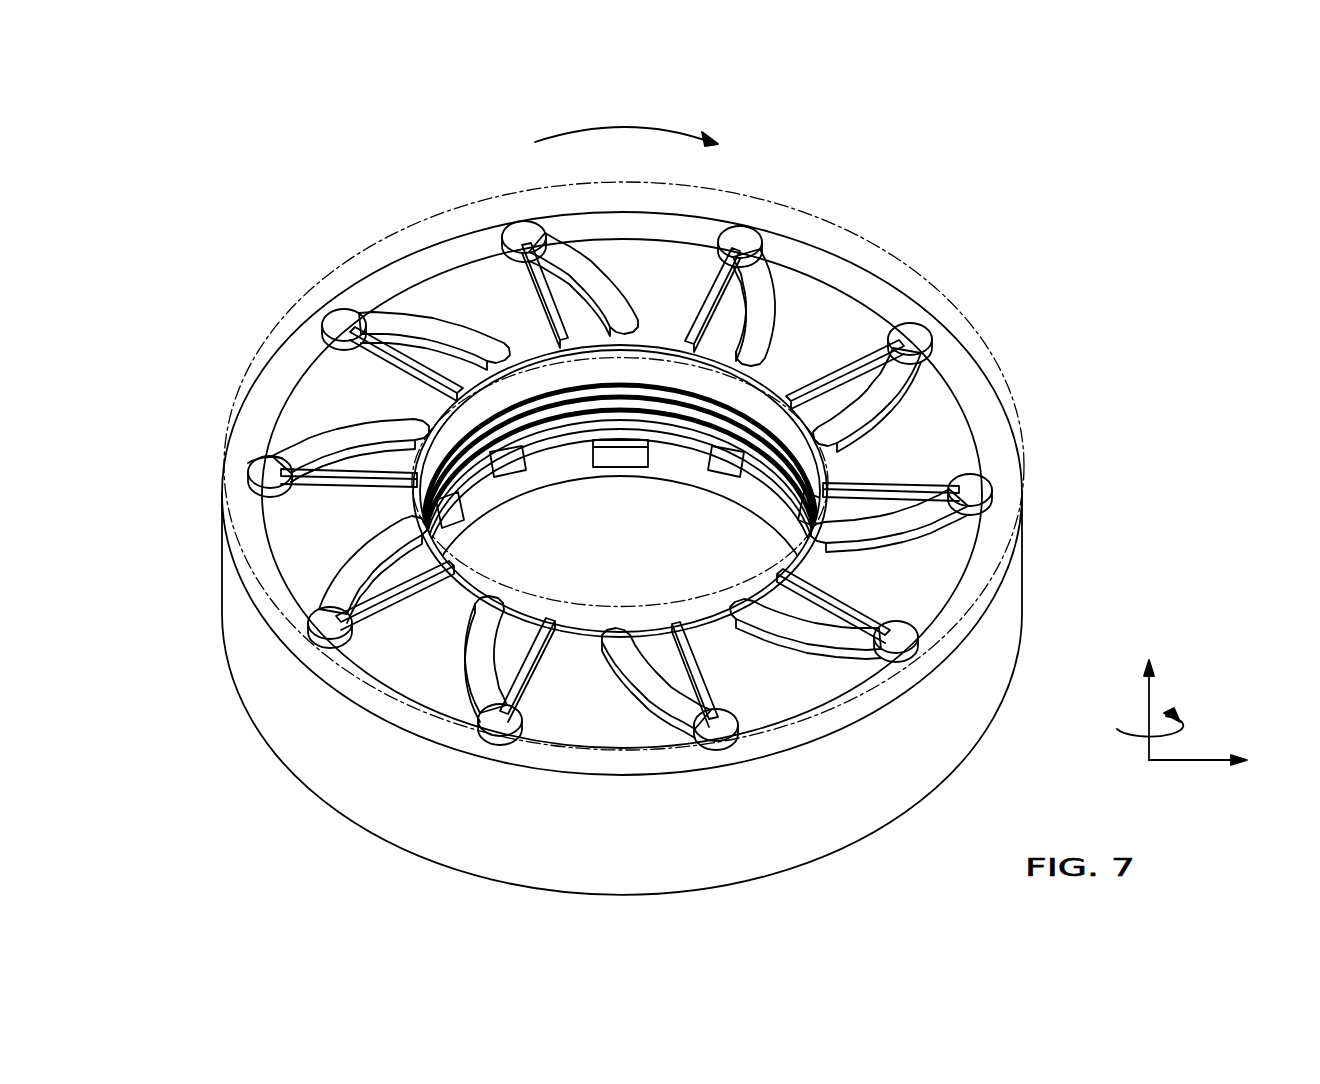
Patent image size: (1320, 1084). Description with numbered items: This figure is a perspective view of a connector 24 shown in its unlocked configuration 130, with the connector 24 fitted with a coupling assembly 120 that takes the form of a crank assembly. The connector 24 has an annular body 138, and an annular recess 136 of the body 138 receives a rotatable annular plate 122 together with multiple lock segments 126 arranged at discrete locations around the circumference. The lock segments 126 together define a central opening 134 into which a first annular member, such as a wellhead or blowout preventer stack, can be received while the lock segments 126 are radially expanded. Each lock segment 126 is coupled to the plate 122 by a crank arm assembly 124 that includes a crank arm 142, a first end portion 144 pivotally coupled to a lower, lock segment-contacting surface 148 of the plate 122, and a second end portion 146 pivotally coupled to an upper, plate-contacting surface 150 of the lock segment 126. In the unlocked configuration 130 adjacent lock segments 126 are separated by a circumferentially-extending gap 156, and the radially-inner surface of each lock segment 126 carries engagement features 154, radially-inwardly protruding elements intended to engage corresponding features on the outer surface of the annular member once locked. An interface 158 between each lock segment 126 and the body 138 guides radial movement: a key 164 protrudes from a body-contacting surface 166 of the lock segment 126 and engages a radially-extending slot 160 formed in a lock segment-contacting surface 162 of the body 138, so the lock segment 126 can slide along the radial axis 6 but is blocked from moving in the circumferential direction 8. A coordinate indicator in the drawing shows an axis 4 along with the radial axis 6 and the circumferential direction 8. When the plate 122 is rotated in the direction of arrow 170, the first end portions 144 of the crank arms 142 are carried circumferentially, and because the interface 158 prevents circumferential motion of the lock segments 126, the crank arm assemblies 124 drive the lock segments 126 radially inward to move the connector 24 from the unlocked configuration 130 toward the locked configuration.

The connector 24 is at (1083, 246).
The unlocked configuration 130 is at (1050, 307).
The body 138 is at (1016, 632).
The recess 136 is at (985, 552).
The plate 122 is at (360, 243).
The coupling assembly 120 is at (309, 428).
The crank arm 142 is at (337, 440).
The surface 166 is at (508, 360).
The engagement features 154 is at (660, 380).
The second end portion 146 is at (446, 398).
The crank arm assembly 124 is at (298, 503).
The interface 158 is at (478, 538).
The surface 150 is at (457, 400).
The circumferentially-extending gap 156 is at (330, 445).
The lock segments 126 is at (592, 350).
The first end portion 144 is at (258, 484).
The surface 148 is at (256, 462).
The opening 134 is at (620, 548).
The surface 162 is at (547, 448).
The radially-extending slot 160 is at (498, 482).
The key 164 is at (548, 470).
The arrow 170 is at (618, 128).
The vertical axis 4 is at (1149, 700).
The radial axis 6 is at (1190, 760).
The circumferential direction 8 is at (1128, 728).